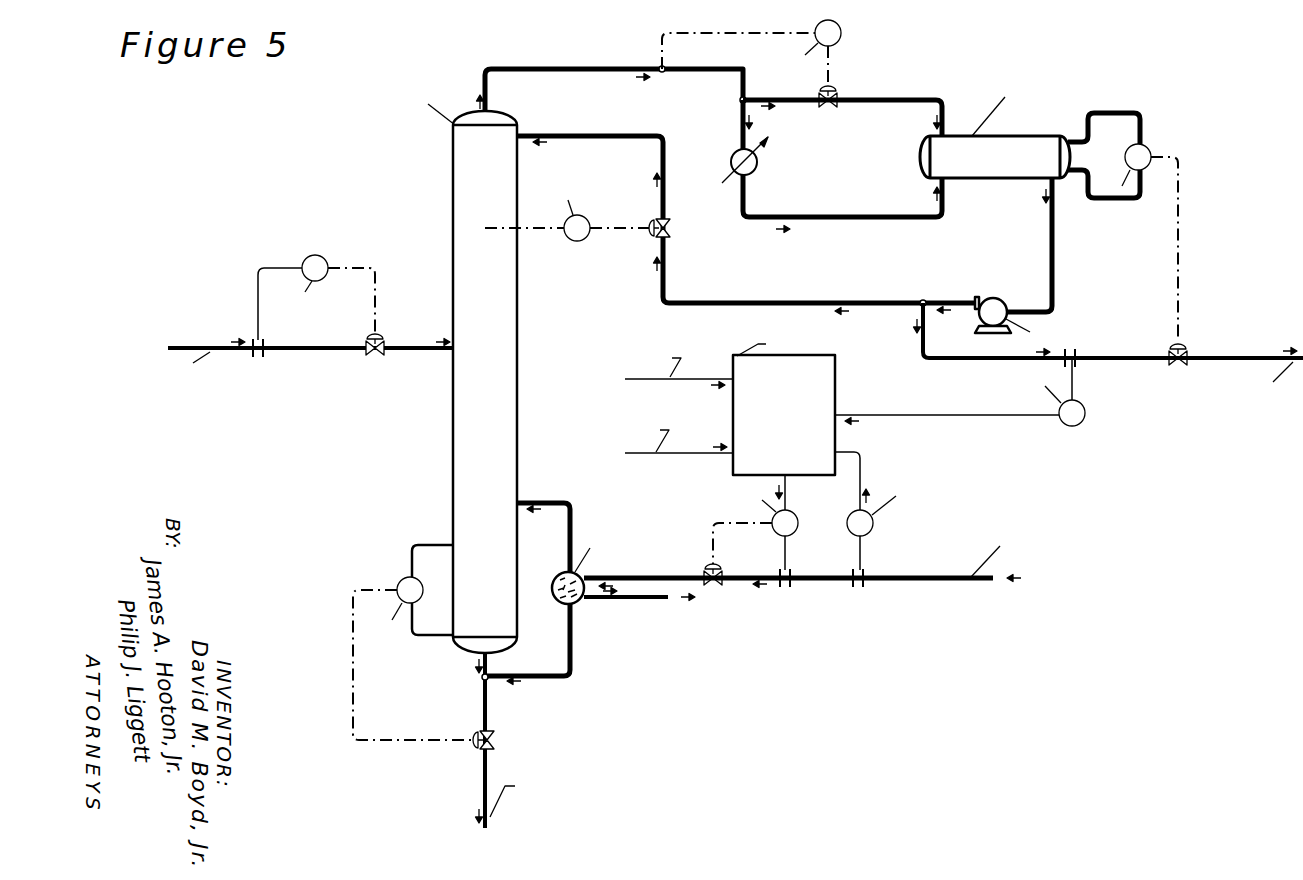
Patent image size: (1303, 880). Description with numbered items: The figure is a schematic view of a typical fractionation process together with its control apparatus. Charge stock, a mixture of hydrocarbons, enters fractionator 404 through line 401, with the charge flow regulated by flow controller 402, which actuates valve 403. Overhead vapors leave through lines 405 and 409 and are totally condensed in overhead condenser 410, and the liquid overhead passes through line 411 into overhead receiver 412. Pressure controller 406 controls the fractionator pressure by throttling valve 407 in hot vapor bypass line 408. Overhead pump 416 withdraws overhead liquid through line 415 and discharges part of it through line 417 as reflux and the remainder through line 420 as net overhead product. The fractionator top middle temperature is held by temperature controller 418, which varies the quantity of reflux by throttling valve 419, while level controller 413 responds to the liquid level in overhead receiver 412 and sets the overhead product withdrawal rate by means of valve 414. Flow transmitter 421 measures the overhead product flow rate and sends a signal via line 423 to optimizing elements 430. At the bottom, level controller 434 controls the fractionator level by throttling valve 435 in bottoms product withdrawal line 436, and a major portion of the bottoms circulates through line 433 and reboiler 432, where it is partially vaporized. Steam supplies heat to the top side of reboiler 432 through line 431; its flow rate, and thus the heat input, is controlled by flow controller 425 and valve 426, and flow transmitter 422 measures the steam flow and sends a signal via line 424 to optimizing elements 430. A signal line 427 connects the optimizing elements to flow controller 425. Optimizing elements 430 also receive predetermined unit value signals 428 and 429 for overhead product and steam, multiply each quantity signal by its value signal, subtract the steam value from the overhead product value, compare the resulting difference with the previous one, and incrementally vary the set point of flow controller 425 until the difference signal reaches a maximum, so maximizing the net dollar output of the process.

The charge line 401 is at (183, 345).
The flow controller 402 is at (313, 257).
The valve 403 is at (372, 337).
The fractionator 404 is at (452, 163).
The overhead vapor line 405 is at (556, 67).
The pressure controller 406 is at (841, 38).
The valve 407 is at (822, 90).
The hot vapor bypass line 408 is at (892, 99).
The overhead vapor line 409 is at (742, 122).
The overhead condenser 410 is at (738, 152).
The liquid overhead line 411 is at (898, 220).
The overhead receiver 412 is at (992, 181).
The level controller 413 is at (1148, 148).
The valve 414 is at (1185, 345).
The pump suction line 415 is at (1054, 268).
The overhead pump 416 is at (994, 300).
The reflux line 417 is at (752, 302).
The temperature controller 418 is at (567, 238).
The valve 419 is at (672, 232).
The net overhead product line 420 is at (997, 361).
The flow transmitter 421 is at (1082, 424).
The flow transmitter 422 is at (870, 531).
The flow signal line 423 is at (941, 416).
The flow signal line 424 is at (863, 463).
The flow controller 425 is at (791, 533).
The valve 426 is at (716, 557).
The set point signal line 427 is at (789, 504).
The unit value signal 428 is at (698, 381).
The unit value signal 429 is at (698, 456).
The optimizing elements 430 is at (838, 390).
The steam line 431 is at (906, 580).
The reboiler 432 is at (583, 603).
The bottoms circulation line 433 is at (538, 677).
The level controller 434 is at (400, 578).
The valve 435 is at (475, 732).
The bottoms product withdrawal line 436 is at (483, 775).